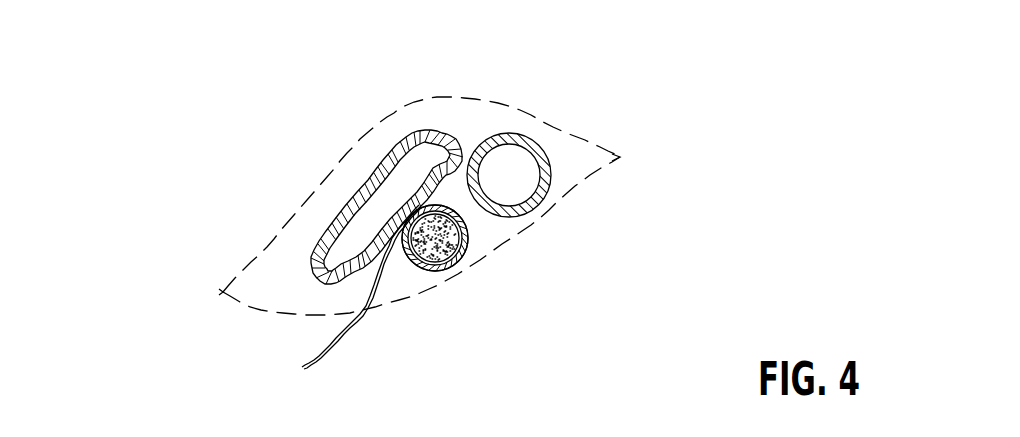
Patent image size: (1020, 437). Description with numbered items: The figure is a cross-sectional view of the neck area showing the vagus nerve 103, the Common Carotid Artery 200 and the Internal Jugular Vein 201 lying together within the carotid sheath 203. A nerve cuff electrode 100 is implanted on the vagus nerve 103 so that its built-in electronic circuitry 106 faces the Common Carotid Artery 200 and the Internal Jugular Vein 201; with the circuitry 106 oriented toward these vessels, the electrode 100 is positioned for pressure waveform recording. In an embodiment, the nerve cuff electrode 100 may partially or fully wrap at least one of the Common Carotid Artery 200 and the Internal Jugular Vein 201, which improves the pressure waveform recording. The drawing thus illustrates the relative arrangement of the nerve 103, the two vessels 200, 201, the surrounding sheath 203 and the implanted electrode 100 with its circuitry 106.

The nerve cuff electrode 100 is at (464, 261).
The vagus nerve 103 is at (428, 270).
The built-in electronic circuitry 106 is at (468, 218).
The Common Carotid Artery (CCA) 200 is at (512, 156).
The Internal Jugular Vein (IJV) 201 is at (434, 156).
The carotid sheath 203 is at (594, 144).